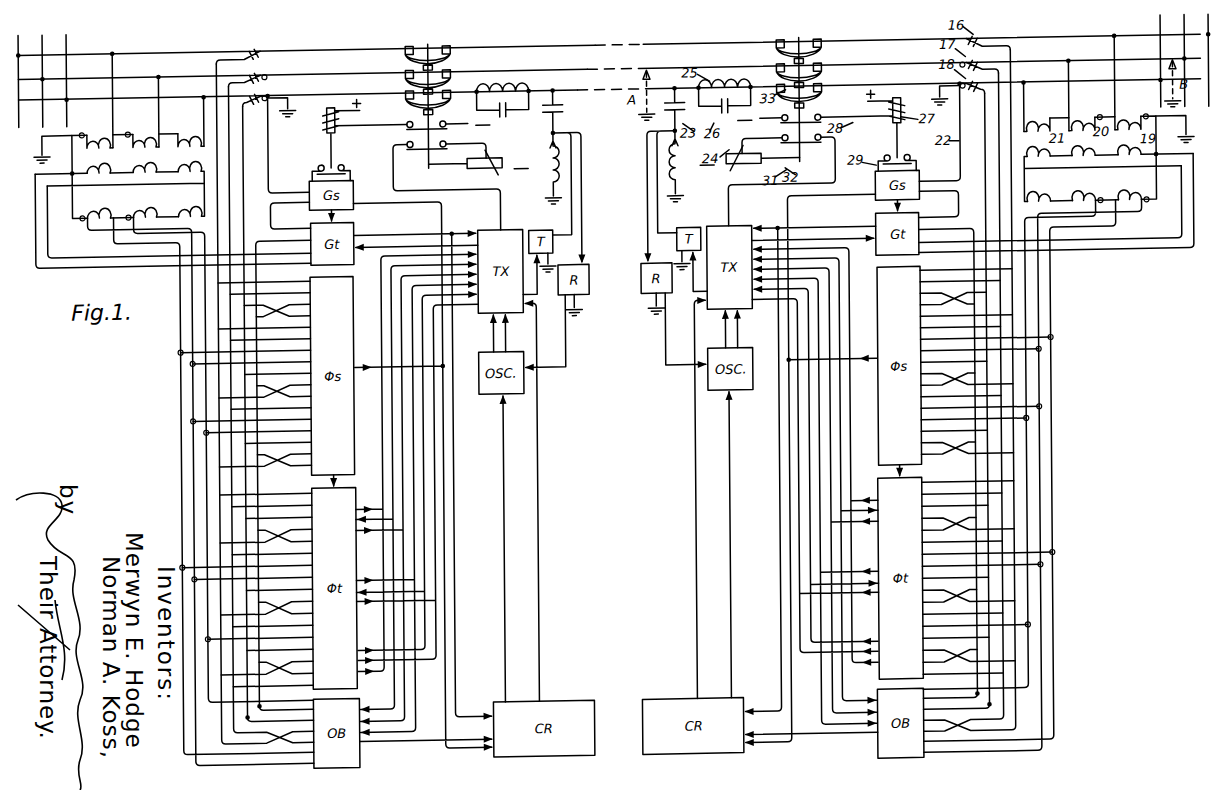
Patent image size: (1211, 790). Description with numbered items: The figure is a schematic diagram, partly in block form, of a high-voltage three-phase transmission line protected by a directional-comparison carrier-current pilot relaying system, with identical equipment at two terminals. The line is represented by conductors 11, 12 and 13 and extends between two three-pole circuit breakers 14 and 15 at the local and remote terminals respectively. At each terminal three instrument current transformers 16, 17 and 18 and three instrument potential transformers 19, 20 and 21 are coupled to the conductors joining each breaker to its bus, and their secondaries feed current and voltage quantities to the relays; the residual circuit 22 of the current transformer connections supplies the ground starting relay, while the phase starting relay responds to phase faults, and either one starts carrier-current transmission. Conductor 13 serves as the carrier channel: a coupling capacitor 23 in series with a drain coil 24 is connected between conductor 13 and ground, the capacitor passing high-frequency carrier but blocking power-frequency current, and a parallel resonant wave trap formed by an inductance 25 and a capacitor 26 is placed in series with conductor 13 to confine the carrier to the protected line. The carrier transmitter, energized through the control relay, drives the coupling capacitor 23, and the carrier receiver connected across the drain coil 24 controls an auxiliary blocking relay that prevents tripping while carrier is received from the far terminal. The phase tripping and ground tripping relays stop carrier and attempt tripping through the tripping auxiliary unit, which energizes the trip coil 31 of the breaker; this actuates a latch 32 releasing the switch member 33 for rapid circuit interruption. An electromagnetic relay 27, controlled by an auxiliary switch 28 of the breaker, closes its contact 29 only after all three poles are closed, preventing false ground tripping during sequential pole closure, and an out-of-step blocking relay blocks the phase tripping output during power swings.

The conductor 11 is at (577, 49).
The conductor 12 is at (577, 73).
The conductor 13 is at (577, 93).
The circuit breaker 14 is at (427, 106).
The circuit breaker 15 is at (815, 118).
The instrument current transformer 16 is at (258, 50).
The instrument current transformer 17 is at (264, 72).
The instrument current transformer 18 is at (264, 93).
The instrument potential transformer 19 is at (94, 177).
The instrument potential transformer 20 is at (137, 176).
The instrument potential transformer 21 is at (183, 175).
The residual circuit 22 is at (271, 148).
The coupling capacitor 23 is at (565, 113).
The drain coil 24 is at (550, 155).
The inductance 25 is at (502, 87).
The capacitor 26 is at (505, 121).
The electromagnetic relay 27 is at (329, 128).
The auxiliary switch 28 is at (408, 133).
The contact 29 is at (353, 175).
The trip coil 31 is at (499, 166).
The latch 32 is at (448, 173).
The switch member 33 is at (440, 99).